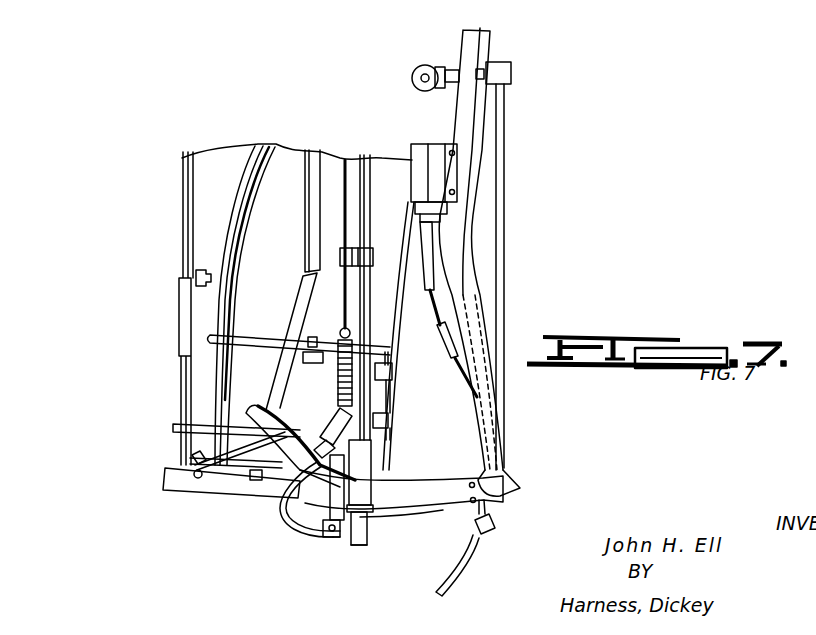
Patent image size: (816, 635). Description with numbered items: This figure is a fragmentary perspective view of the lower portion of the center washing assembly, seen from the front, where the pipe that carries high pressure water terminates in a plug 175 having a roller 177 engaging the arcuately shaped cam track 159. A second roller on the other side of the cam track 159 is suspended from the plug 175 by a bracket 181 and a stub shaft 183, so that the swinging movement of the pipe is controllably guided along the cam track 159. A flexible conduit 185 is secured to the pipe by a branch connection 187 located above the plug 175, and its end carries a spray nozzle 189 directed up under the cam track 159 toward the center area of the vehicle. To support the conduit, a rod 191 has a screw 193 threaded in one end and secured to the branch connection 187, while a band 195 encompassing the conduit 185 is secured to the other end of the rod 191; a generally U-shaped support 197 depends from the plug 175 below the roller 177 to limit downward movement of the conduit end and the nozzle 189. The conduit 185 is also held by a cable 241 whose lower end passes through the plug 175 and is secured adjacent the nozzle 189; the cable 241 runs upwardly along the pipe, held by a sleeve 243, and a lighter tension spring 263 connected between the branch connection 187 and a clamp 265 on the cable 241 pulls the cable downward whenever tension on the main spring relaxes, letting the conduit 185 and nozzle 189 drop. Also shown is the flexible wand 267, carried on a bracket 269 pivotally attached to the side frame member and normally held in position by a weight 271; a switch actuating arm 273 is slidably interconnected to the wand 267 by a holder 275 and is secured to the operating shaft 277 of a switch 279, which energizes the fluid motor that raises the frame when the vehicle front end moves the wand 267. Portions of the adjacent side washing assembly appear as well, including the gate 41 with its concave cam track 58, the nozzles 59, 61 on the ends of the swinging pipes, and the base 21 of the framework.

The gate 41 is at (203, 166).
The nozzle 59 is at (197, 276).
The sleeve 243 is at (340, 258).
The clamp 265 is at (340, 330).
The tension spring 263 is at (337, 388).
The cable 241 is at (390, 357).
The bracket 181 is at (398, 440).
The stub shaft 183 is at (397, 467).
The branch connection 187 is at (412, 383).
The weight 271 is at (415, 70).
The bracket 269 is at (511, 69).
The switch 279 is at (411, 150).
The operating shaft 277 is at (455, 198).
The switch actuating arm 273 is at (433, 290).
The cam track 159 is at (493, 480).
The plug 175 is at (373, 493).
The spray nozzle 189 is at (388, 525).
The holder 275 is at (494, 521).
The flexible wand 267 is at (477, 550).
The roller 177 is at (357, 546).
The band 195 is at (330, 535).
The U-shaped support 197 is at (347, 548).
The rod 191 is at (283, 503).
The flexible conduit 185 is at (283, 530).
The screw 193 is at (257, 474).
The nozzle 61 is at (190, 473).
The base 21 is at (165, 473).
The cam track 58 is at (197, 432).